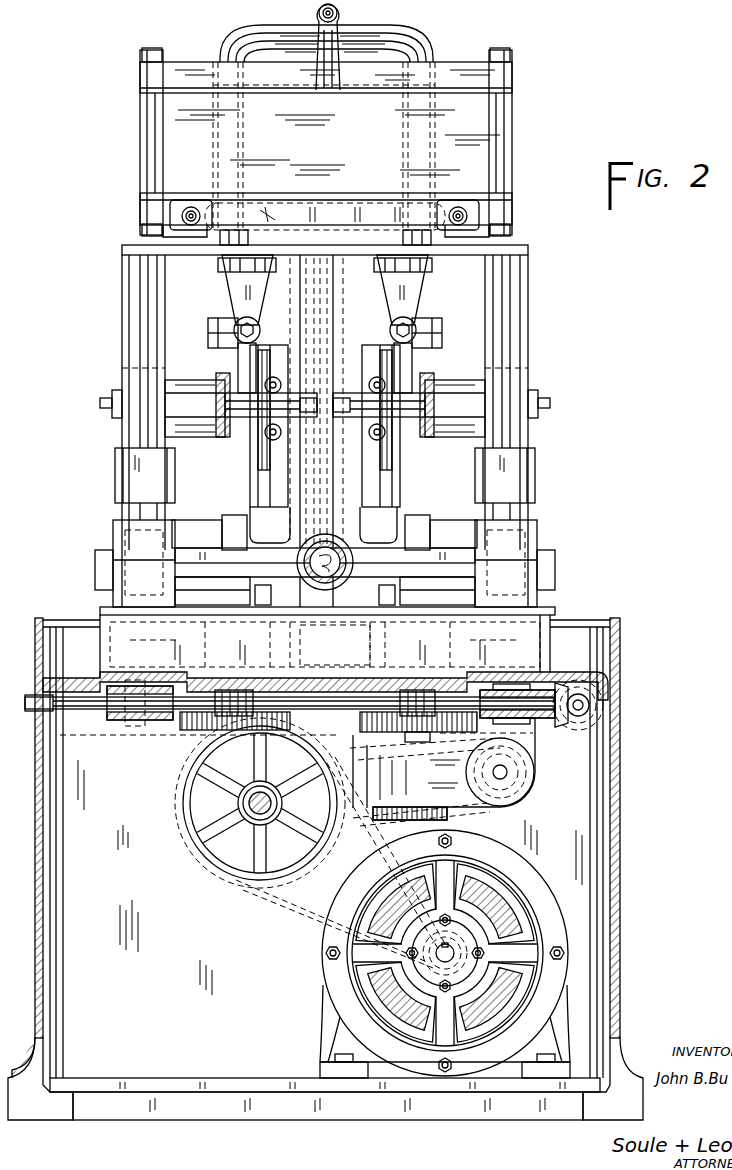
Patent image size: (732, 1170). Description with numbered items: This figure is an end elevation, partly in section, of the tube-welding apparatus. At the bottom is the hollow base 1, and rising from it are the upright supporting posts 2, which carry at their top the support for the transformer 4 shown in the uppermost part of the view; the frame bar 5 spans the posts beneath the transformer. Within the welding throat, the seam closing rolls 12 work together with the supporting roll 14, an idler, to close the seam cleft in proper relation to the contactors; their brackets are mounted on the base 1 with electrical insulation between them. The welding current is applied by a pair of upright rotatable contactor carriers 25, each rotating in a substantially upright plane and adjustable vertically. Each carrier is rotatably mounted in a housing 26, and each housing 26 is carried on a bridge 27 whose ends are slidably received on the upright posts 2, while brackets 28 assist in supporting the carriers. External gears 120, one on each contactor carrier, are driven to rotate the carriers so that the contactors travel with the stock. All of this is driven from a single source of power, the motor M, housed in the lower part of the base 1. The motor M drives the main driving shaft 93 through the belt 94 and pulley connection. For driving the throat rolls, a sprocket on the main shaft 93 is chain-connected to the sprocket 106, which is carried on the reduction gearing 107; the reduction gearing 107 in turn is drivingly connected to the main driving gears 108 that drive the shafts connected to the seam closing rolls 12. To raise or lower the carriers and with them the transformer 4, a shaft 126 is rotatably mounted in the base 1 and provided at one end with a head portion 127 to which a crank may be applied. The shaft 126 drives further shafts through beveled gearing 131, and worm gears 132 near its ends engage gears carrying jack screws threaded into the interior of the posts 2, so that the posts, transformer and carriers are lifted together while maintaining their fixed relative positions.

The hollow base 1 is at (37, 758).
The upright supporting posts 2 is at (122, 330).
The transformer 4 is at (420, 62).
The frame top bar 5 is at (528, 250).
The seam closing rolls 12 is at (195, 547).
The supporting roll 14 is at (365, 652).
The rotatable contactor carriers 25 is at (290, 272).
The housings 26 is at (443, 375).
The bridge 27 is at (535, 468).
The brackets 28 is at (418, 320).
The main driving shaft 93 is at (255, 815).
The belt 94 is at (293, 912).
The sprocket 106 is at (533, 772).
The reduction gearing 107 is at (440, 802).
The main driving gears 108 is at (180, 726).
The external gears 120 is at (258, 472).
The shaft 126 is at (95, 708).
The head portion 127 is at (27, 697).
The beveled gearing 131 is at (566, 722).
The worm gears 132 is at (508, 690).
The motor M is at (323, 970).